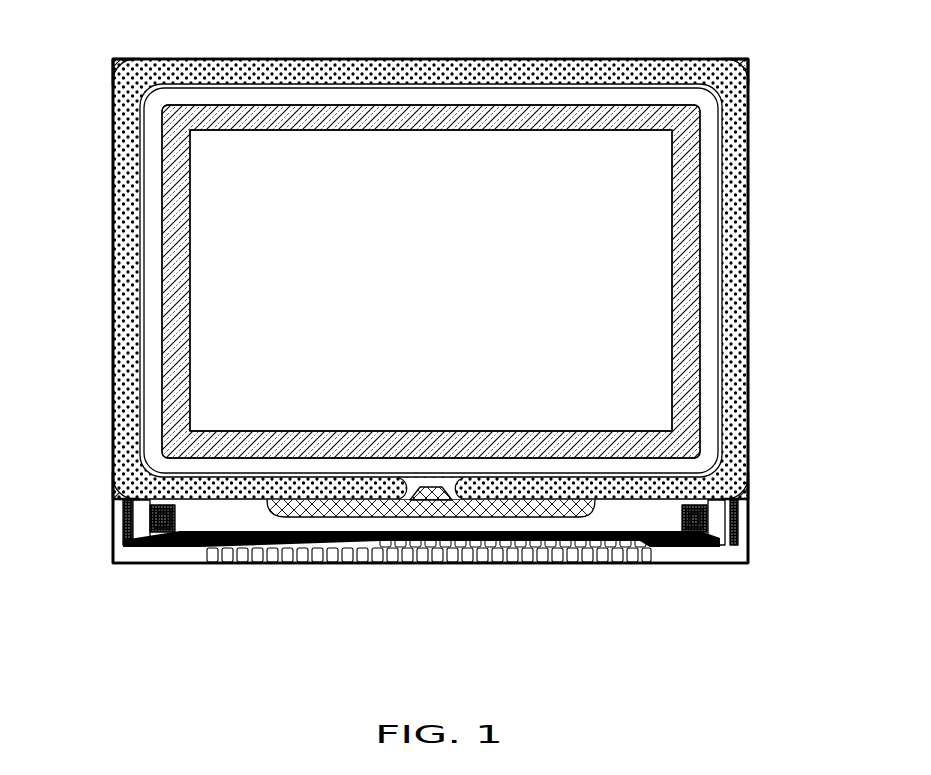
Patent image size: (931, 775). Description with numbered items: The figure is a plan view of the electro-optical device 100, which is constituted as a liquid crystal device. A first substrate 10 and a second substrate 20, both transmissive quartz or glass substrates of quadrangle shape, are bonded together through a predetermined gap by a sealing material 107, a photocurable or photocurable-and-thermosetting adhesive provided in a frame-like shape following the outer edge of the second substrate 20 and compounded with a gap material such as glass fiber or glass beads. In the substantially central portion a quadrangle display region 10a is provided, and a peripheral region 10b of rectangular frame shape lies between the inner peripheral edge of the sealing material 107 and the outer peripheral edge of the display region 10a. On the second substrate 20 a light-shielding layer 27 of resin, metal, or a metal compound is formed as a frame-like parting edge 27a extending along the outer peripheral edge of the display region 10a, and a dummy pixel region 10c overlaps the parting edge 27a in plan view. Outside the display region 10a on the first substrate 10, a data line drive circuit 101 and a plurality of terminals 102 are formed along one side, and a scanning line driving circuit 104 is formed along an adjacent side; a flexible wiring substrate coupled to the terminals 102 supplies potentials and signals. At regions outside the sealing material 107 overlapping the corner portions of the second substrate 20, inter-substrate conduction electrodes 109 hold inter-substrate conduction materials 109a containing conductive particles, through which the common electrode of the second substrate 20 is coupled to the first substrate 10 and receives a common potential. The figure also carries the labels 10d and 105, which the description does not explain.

The electro-optical device 100 is at (706, 0).
The first substrate 10 is at (177, 564).
The display region 10a is at (440, 288).
The peripheral region 10b is at (773, 285).
The dummy pixel region 10c is at (763, 322).
The frame region width 10d is at (645, 357).
The second substrate 20 is at (247, 500).
The light-shielding layer 27 is at (515, 281).
The parting edge 27a is at (657, 162).
The data line drive circuit 101 is at (655, 520).
The terminals 102 is at (437, 553).
The scanning line driving circuit 104 is at (150, 363).
The cut-out portion 105 is at (443, 487).
The sealing material 107 is at (665, 228).
The inter-substrate conduction electrodes 109 is at (128, 60).
The inter-substrate conduction materials 109a is at (113, 66).